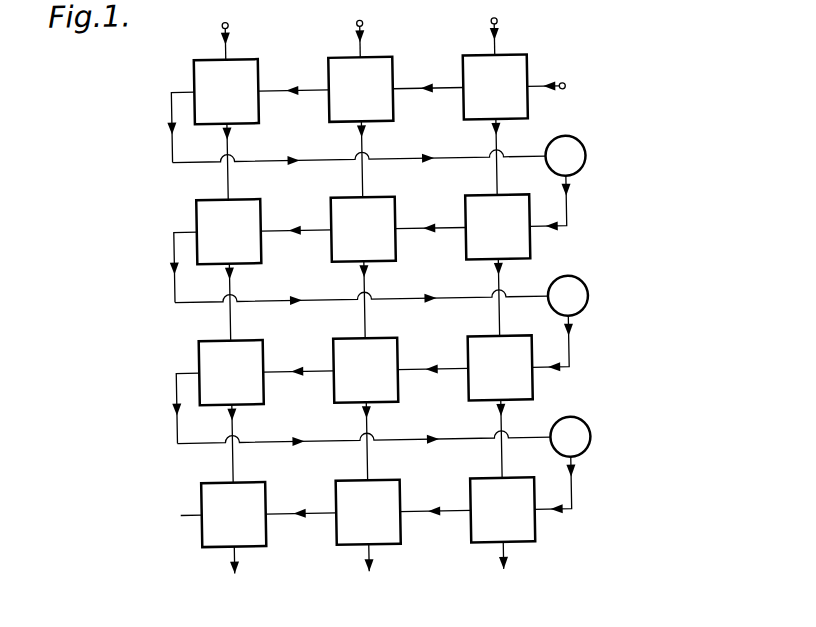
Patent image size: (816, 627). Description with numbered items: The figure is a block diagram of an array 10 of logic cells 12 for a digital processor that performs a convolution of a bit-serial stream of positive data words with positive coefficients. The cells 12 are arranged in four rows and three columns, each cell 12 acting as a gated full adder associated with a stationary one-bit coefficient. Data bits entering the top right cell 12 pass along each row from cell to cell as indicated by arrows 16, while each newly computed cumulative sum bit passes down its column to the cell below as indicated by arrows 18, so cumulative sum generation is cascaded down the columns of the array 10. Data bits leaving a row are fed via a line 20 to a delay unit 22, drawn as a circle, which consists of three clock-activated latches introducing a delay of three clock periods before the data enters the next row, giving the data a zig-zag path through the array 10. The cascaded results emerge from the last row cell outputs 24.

The array 10 is at (612, 133).
The logic cell 12 is at (245, 61).
The arrow 16 is at (290, 84).
The arrow 18 is at (495, 145).
The line 20 is at (178, 136).
The delay unit 22 is at (590, 161).
The last row cell output 24 is at (232, 570).